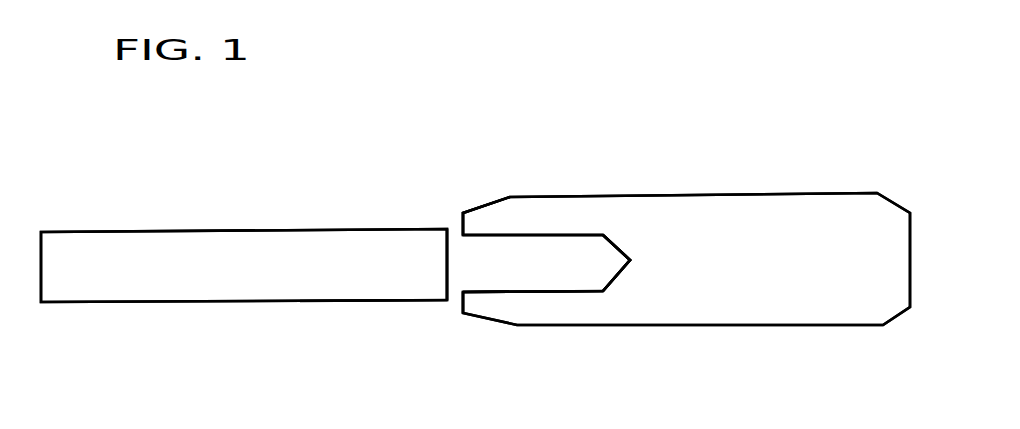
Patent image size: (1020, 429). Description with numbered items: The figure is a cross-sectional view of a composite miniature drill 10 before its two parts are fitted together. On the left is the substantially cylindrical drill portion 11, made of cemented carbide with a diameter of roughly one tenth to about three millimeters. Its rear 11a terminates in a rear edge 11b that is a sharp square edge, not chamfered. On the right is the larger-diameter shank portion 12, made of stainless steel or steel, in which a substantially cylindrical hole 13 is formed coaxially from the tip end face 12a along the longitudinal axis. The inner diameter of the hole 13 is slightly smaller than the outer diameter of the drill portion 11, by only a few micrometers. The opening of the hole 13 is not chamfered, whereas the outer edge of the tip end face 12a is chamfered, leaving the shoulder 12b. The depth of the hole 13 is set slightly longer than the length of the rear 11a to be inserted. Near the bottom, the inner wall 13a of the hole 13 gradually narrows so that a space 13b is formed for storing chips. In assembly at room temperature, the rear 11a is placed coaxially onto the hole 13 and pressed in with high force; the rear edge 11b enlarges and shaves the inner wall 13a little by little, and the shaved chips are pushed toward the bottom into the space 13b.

The miniature drill 10 is at (484, 152).
The drill portion 11 is at (232, 231).
The rear of the drill portion 11a is at (383, 301).
The rear edge 11b is at (448, 292).
The shank portion 12 is at (745, 193).
The tip end face 12a is at (463, 221).
The shoulder 12b is at (460, 233).
The hole 13 is at (538, 240).
The inner wall of the hole 13a is at (583, 291).
The space 13b is at (629, 267).